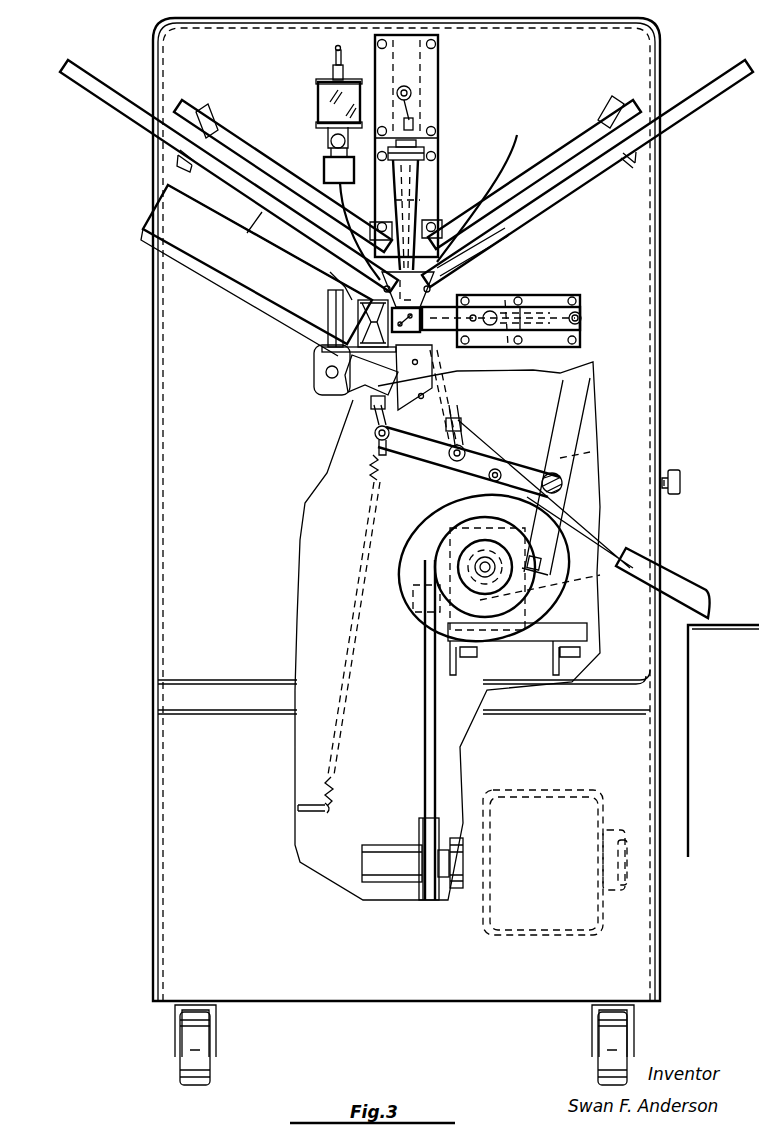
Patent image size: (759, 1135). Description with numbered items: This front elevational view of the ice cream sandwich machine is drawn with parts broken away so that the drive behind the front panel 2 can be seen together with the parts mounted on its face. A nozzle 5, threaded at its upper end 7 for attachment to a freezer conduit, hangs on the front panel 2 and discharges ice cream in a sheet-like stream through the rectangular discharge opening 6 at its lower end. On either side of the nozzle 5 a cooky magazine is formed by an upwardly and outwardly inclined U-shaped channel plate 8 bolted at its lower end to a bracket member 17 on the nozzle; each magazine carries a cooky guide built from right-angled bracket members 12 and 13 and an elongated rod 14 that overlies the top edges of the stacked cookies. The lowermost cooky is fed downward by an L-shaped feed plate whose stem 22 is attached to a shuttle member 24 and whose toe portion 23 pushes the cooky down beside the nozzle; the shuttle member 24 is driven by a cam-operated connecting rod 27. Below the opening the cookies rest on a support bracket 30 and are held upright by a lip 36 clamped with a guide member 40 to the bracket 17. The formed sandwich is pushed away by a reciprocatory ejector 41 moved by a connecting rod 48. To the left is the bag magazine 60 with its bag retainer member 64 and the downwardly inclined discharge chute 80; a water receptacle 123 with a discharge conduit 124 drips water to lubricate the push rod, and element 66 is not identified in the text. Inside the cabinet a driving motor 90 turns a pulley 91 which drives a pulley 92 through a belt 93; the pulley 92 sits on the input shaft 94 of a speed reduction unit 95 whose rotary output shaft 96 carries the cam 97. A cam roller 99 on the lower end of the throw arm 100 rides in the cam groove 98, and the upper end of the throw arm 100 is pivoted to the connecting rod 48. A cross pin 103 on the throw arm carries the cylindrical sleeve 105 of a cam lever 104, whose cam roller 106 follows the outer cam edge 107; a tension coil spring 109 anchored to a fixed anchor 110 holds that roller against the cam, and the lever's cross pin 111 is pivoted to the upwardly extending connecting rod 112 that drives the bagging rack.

The front panel 2 is at (636, 67).
The nozzle 5 is at (416, 212).
The discharge opening 6 is at (437, 292).
The upper end of nozzle 7 is at (430, 155).
The channel plate 8 is at (150, 124).
The bracket member 12 is at (214, 124).
The bracket member 13 is at (374, 238).
The elongated rod 14 is at (255, 163).
The bracket member 17 is at (470, 258).
The stem 22 is at (445, 166).
The toe portion 23 is at (376, 220).
The shuttle member 24 is at (438, 140).
The connecting rod 27 is at (430, 193).
The support bracket 30 is at (412, 378).
The lip 36 is at (415, 325).
The guide member 40 is at (412, 350).
The ejector 41 is at (467, 315).
The connecting rod 48 is at (533, 317).
The bag magazine 60 is at (263, 308).
The bag retainer member 64 is at (347, 290).
The chute top 66 is at (185, 210).
The discharge chute 80 is at (370, 392).
The driving motor 90 is at (603, 918).
The pulley 91 is at (416, 890).
The pulley 92 is at (422, 632).
The belt 93 is at (425, 687).
The input shaft 94 is at (435, 600).
The speed reduction unit 95 is at (440, 508).
The rotary output shaft 96 is at (484, 567).
The cam 97 is at (453, 490).
The cam groove 98 is at (562, 600).
The cam roller 99 is at (592, 561).
The throw arm 100 is at (567, 415).
The cross pin 103 is at (563, 481).
The cam lever 104 is at (481, 462).
The cylindrical sleeve 105 is at (567, 459).
The cam roller 106 is at (498, 472).
The outer cam edge 107 is at (470, 490).
The tension coil spring 109 is at (370, 492).
The fixed anchor 110 is at (305, 812).
The cross pin 111 is at (377, 436).
The connecting rod 112 is at (373, 406).
The water receptacle 123 is at (327, 102).
The discharge conduit 124 is at (337, 186).